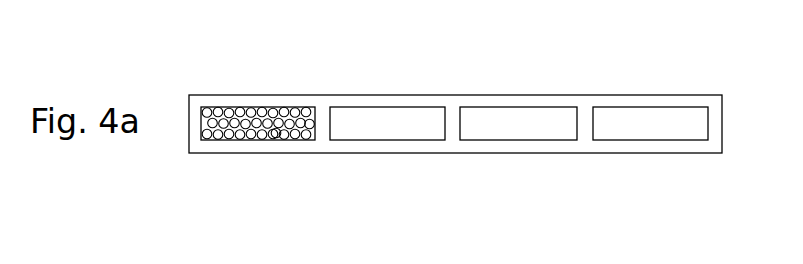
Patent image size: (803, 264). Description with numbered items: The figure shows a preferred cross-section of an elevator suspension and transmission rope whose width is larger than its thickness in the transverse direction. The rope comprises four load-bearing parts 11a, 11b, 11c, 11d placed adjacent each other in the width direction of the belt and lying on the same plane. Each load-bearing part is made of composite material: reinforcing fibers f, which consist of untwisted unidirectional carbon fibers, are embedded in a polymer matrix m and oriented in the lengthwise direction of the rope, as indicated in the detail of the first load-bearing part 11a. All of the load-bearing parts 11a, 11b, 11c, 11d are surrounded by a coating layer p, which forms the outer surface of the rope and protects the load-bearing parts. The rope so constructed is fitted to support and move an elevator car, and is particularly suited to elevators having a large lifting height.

The load-bearing part 11a is at (258, 137).
The load-bearing part 11b is at (388, 112).
The load-bearing part 11c is at (510, 112).
The load-bearing part 11d is at (626, 113).
The polymer matrix m is at (250, 132).
The reinforcing fibers f is at (276, 134).
The coating layer p is at (454, 151).